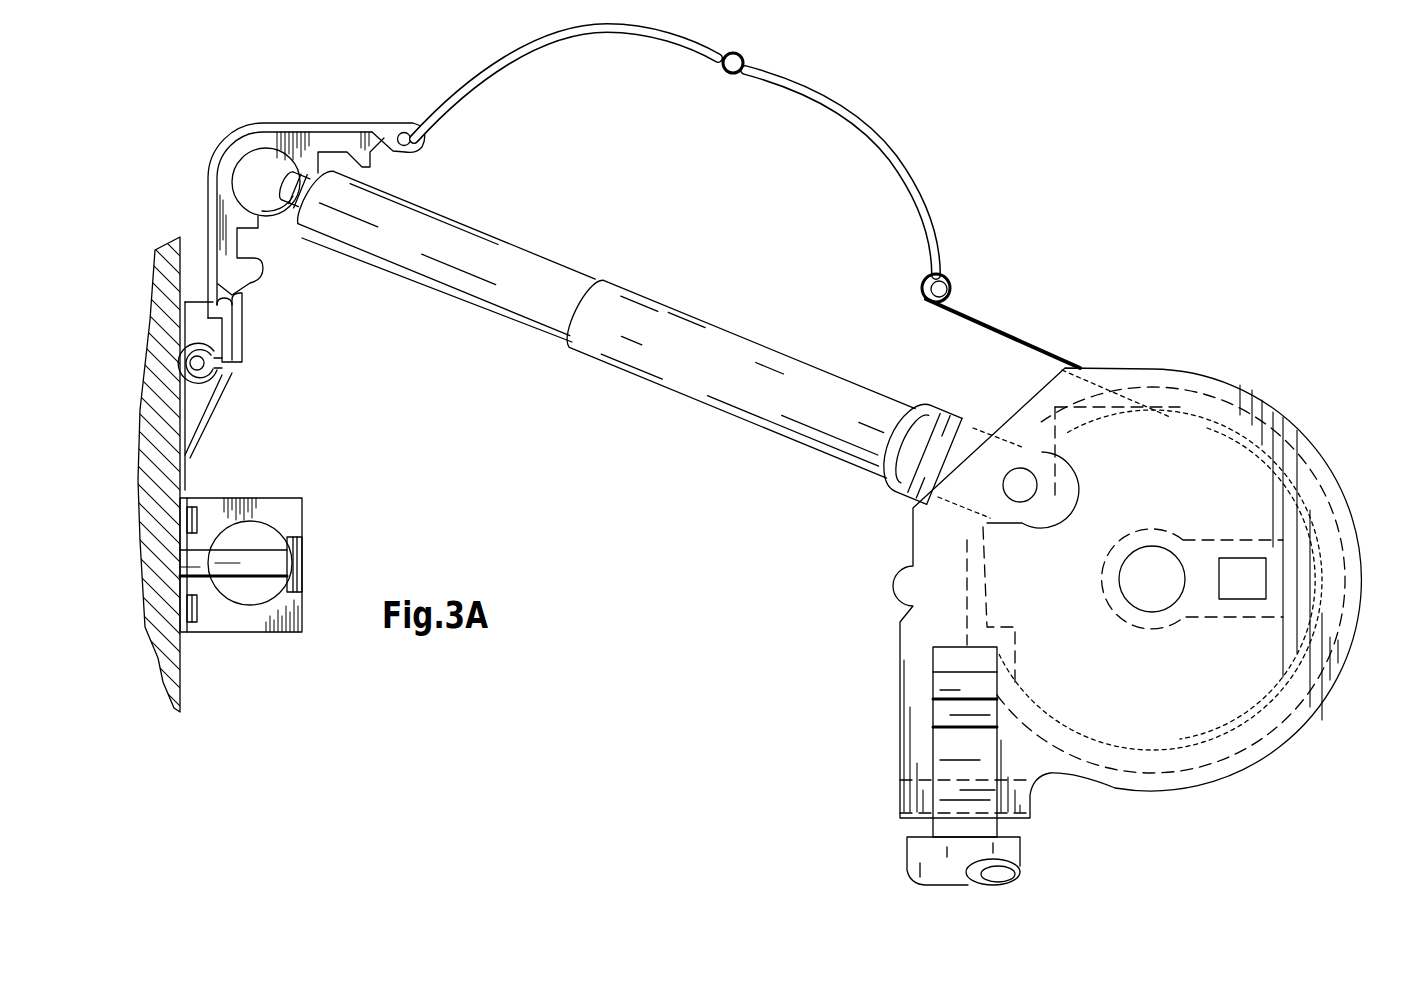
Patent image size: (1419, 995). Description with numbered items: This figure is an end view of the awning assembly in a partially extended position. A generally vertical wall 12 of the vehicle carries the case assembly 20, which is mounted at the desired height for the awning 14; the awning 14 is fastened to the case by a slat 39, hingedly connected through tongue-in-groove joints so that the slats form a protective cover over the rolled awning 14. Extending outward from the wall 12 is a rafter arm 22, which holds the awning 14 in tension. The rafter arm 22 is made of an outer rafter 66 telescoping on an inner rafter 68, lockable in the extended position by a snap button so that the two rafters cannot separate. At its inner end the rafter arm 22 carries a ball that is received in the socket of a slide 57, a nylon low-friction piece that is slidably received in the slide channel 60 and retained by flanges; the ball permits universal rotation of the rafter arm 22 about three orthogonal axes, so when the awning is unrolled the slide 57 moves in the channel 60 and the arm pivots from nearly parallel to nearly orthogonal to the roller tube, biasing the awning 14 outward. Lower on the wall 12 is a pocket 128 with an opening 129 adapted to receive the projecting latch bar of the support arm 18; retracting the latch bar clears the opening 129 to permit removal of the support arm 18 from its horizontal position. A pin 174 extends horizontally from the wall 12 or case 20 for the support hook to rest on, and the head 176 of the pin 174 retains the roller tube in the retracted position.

The wall 12 is at (185, 484).
The awning 14 is at (998, 333).
The support arm 18 is at (1020, 858).
The case assembly 20 is at (296, 128).
The rafter arm 22 is at (621, 337).
The slat 39 is at (870, 126).
The slide 57 is at (258, 228).
The slide channel 60 is at (253, 147).
The outer rafter 66 is at (733, 330).
The inner rafter 68 is at (500, 240).
The pocket 128 is at (273, 637).
The opening 129 is at (267, 533).
The pin 174 is at (244, 564).
The head 176 is at (293, 553).